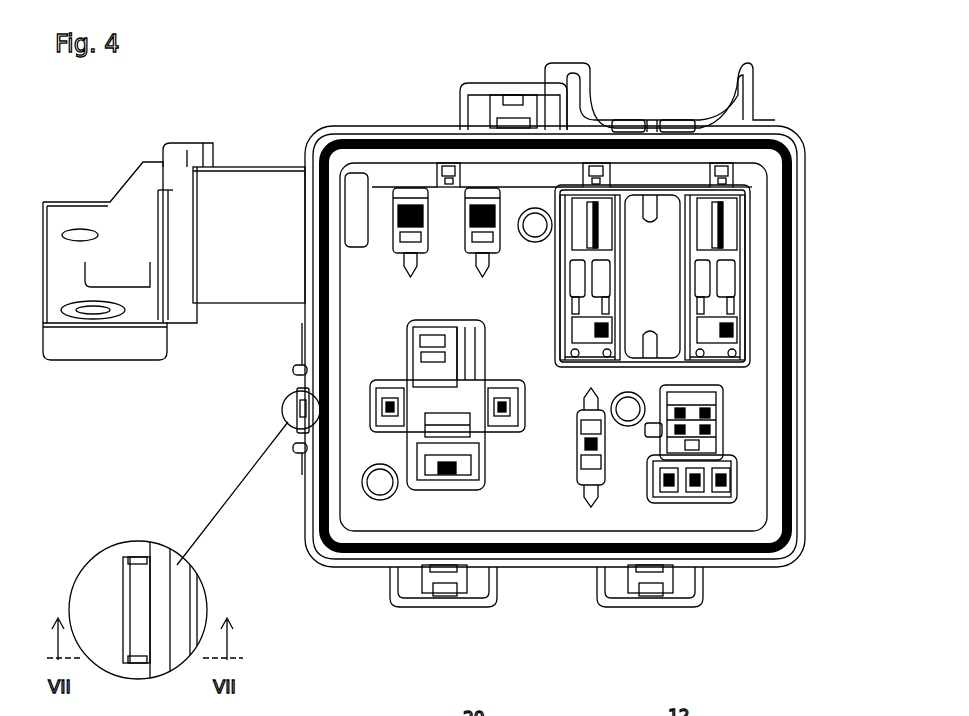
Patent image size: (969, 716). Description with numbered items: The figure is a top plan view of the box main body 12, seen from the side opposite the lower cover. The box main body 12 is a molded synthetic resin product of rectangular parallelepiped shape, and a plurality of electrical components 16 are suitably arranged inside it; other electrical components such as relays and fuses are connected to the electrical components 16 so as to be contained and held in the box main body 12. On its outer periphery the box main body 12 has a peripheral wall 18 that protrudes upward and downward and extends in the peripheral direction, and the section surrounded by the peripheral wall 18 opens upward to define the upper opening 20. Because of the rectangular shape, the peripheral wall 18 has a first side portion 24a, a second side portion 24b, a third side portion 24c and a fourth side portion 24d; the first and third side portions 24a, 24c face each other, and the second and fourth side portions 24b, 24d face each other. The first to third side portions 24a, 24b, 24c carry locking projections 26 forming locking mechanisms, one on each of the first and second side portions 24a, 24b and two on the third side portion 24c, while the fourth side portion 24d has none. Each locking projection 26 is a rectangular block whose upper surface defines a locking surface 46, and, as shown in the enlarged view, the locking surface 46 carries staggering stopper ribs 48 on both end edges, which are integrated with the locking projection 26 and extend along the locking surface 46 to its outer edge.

The box main body 12 is at (803, 75).
The electrical components 16 is at (390, 192).
The peripheral wall 18 is at (785, 208).
The upper opening 20 is at (776, 306).
The first side portion 24a is at (410, 145).
The second side portion 24b is at (318, 480).
The third side portion 24c is at (565, 550).
The fourth side portion 24d is at (790, 347).
The locking projection 26 is at (517, 120).
The locking surface 46 is at (133, 605).
The staggering stopper ribs 48 is at (140, 558).